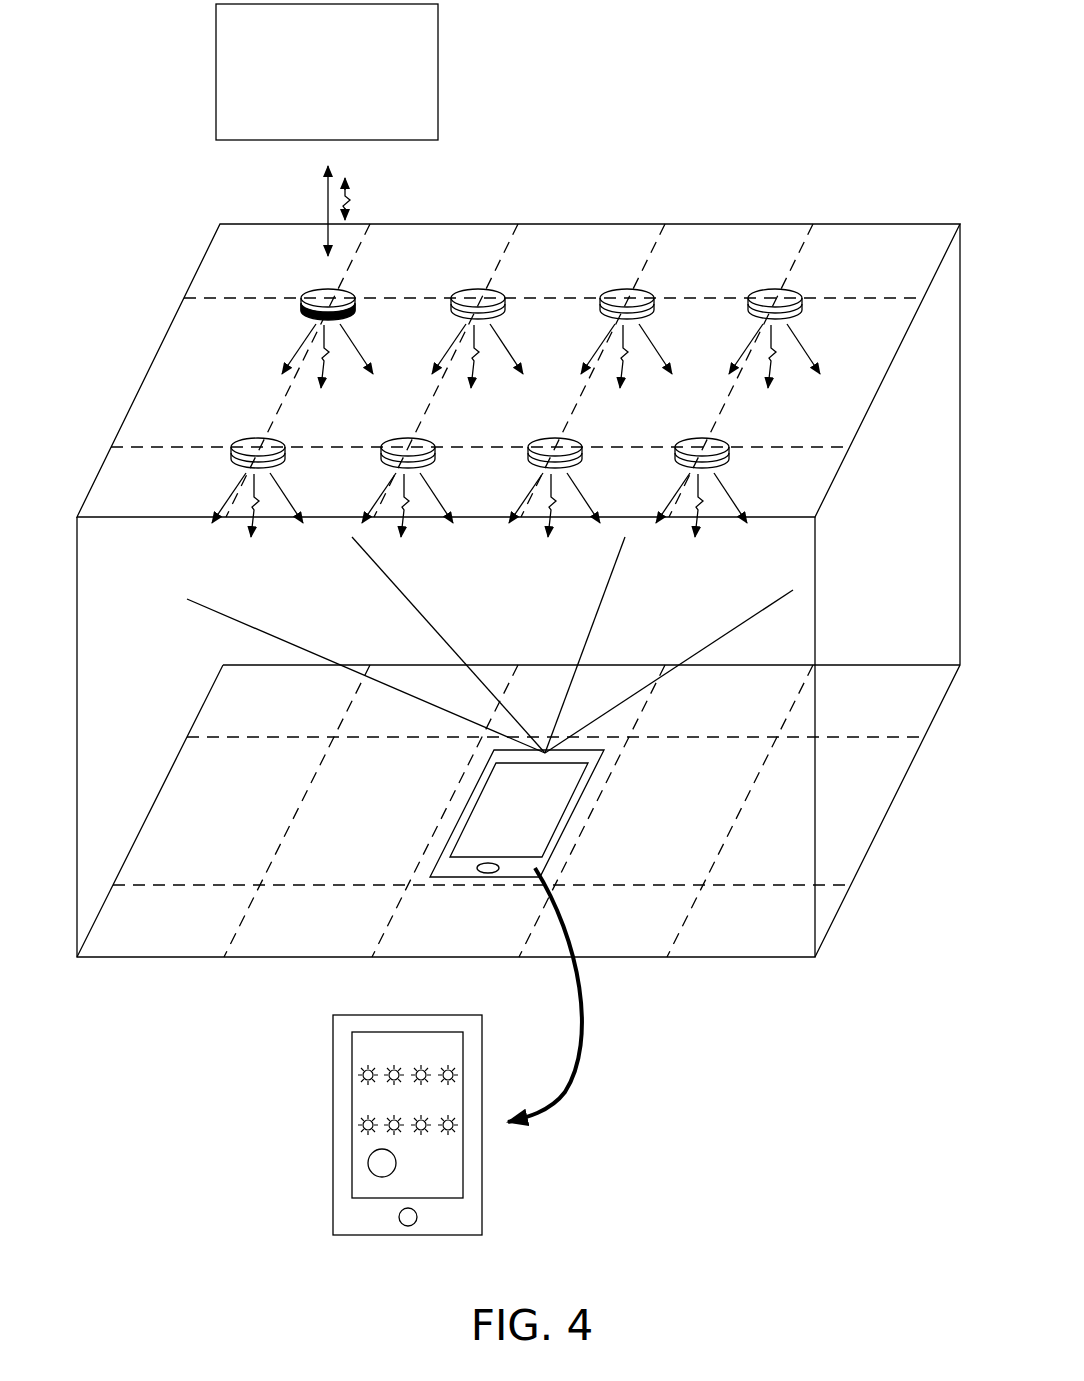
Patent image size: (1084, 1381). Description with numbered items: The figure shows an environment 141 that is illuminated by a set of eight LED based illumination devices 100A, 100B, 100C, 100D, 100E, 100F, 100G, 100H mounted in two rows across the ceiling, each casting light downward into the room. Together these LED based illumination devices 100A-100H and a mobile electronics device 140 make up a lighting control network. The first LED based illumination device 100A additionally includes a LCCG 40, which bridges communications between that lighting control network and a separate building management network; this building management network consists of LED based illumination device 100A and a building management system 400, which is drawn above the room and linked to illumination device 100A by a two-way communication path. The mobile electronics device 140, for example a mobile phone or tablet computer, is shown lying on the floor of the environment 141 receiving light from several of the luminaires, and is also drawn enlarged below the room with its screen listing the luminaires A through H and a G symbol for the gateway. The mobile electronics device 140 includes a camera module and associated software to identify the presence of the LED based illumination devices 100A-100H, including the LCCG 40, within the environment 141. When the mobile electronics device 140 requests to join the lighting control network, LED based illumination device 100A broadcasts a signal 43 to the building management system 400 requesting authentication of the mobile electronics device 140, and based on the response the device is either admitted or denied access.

The building management system 400 is at (308, 128).
The signal 43 is at (346, 192).
The LCCG 40 is at (348, 288).
The LED based illumination device 100A is at (316, 289).
The LED based illumination device 100B is at (463, 289).
The LED based illumination device 100C is at (612, 289).
The LED based illumination device 100D is at (762, 289).
The LED based illumination device 100E is at (240, 438).
The LED based illumination device 100F is at (390, 438).
The LED based illumination device 100G is at (534, 438).
The LED based illumination device 100H is at (684, 438).
The environment 141 is at (95, 460).
The mobile electronics device 140 is at (334, 1157).